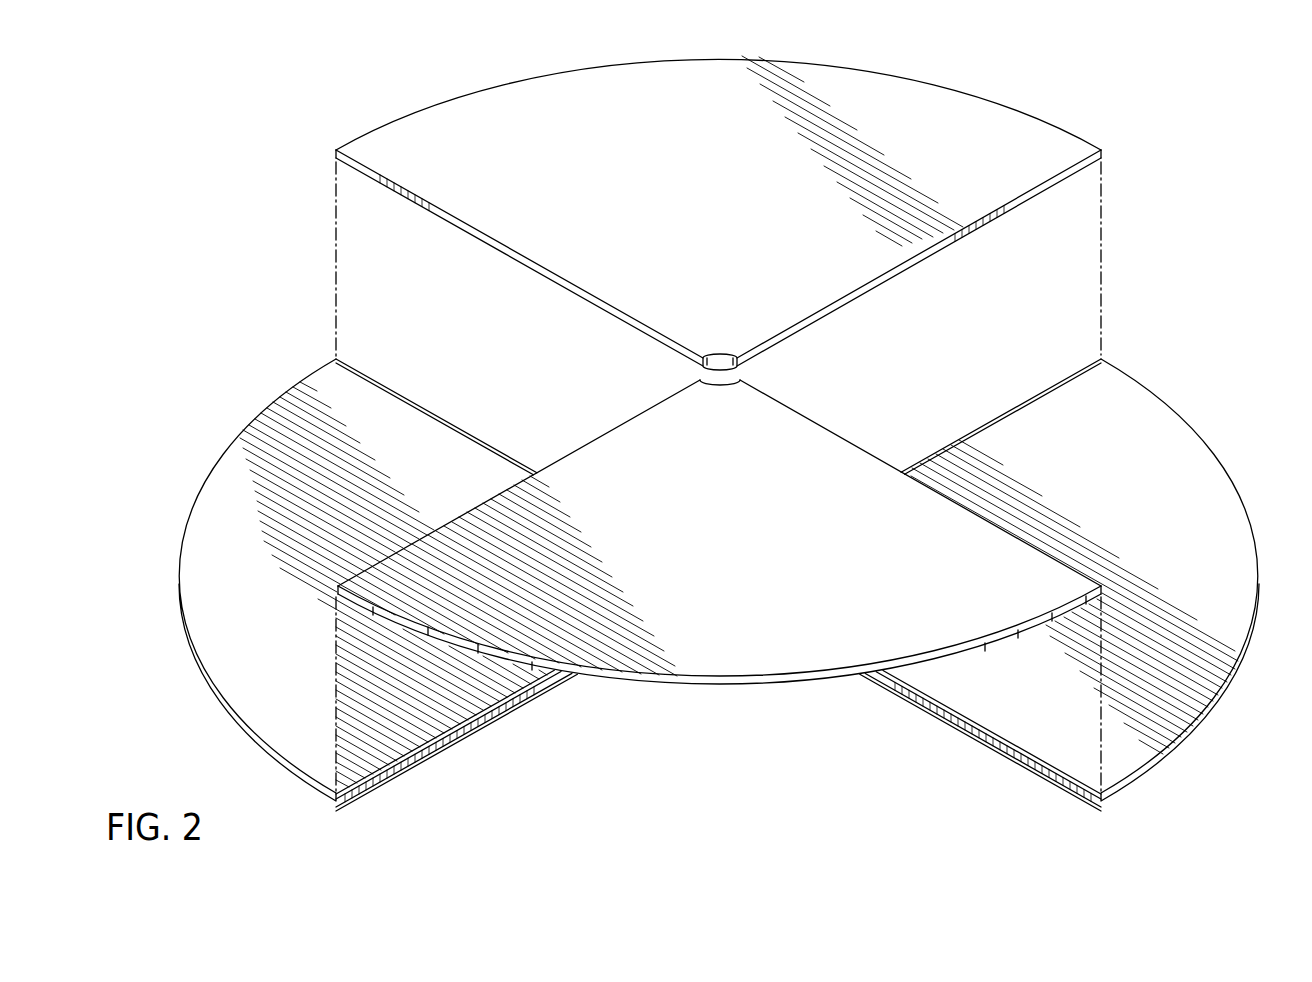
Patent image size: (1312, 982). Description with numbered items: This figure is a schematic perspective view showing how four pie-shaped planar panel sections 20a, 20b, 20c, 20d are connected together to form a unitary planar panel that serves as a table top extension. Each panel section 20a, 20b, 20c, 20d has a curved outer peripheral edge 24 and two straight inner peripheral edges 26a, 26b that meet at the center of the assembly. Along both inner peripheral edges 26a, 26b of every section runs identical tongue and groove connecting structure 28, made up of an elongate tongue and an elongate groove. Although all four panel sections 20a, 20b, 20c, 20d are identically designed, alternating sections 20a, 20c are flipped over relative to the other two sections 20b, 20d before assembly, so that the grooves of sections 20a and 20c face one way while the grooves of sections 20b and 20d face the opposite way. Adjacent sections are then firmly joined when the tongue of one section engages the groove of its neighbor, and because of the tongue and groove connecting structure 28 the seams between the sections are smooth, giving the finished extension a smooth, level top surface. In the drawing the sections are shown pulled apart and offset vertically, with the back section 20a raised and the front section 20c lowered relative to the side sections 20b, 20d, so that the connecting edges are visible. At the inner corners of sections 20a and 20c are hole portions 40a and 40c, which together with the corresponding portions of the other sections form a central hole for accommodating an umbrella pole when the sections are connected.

The planar panel section 20a is at (744, 173).
The planar panel section 20b is at (1130, 458).
The planar panel section 20c is at (768, 605).
The planar panel section 20d is at (250, 585).
The outer peripheral edge 24 is at (1099, 144).
The inner peripheral edge 26a is at (497, 243).
The inner peripheral edge 26b is at (950, 237).
The tongue and groove connecting structure 28 is at (426, 404).
The hole portion 40a is at (722, 353).
The hole portion 40c is at (718, 386).